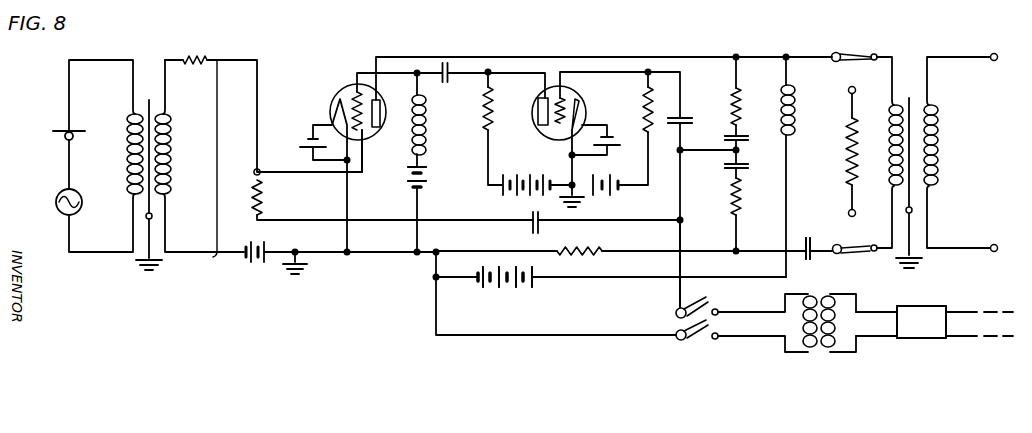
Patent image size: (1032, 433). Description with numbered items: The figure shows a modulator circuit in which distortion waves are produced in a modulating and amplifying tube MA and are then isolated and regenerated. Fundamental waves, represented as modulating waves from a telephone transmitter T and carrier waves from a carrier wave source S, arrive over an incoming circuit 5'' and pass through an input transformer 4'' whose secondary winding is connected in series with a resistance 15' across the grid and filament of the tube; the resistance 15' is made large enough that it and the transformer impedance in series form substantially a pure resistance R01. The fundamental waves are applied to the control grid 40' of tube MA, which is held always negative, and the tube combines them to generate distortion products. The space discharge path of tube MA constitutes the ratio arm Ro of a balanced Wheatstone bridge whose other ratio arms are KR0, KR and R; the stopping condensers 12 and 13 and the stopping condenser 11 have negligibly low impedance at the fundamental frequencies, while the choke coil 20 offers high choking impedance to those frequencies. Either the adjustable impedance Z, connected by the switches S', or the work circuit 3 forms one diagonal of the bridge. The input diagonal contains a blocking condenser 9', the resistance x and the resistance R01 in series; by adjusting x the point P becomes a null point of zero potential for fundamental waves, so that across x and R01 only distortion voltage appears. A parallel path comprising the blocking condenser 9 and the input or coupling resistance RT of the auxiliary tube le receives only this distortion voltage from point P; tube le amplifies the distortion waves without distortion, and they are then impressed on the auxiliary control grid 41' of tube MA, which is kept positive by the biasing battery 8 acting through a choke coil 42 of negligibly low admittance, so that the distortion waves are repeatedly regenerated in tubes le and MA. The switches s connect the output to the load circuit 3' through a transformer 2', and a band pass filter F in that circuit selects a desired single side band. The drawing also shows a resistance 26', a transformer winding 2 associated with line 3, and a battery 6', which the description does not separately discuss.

The telephone transmitter T is at (65, 132).
The carrier wave source S is at (78, 202).
The incoming circuit 5'' is at (120, 157).
The input transformer 4'' is at (153, 155).
The resistance 15' is at (209, 50).
The resistance R01 is at (218, 152).
The resistance x is at (263, 186).
The modulating and amplifying tube MA is at (339, 97).
The control grid 40' is at (371, 86).
The ratio arm Ro is at (377, 128).
The auxiliary control grid 41' is at (374, 157).
The blocking condenser 9' is at (484, 153).
The choke coil 42 is at (427, 127).
The biasing battery 8 is at (426, 181).
The resistor 26' is at (500, 118).
The auxiliary tube le is at (579, 101).
The input or coupling resistance RT is at (645, 105).
The blocking condenser 9 is at (685, 112).
The null point P is at (678, 218).
The ratio arm R is at (743, 105).
The stopping condenser 12 is at (724, 138).
The stopping condenser 13 is at (745, 166).
The ratio arm KR is at (729, 196).
The choke coil 20 is at (794, 121).
The impedance Z is at (845, 143).
The switches S' is at (855, 150).
The output transformer primary 2 is at (903, 124).
The work circuit 3 is at (961, 153).
The stopping condenser 11 is at (811, 252).
The ratio arm KR0 is at (590, 251).
The battery 6' is at (505, 293).
The switches s is at (697, 306).
The transformer 2' is at (819, 337).
The load circuit 3' is at (876, 332).
The band pass filter F is at (926, 339).